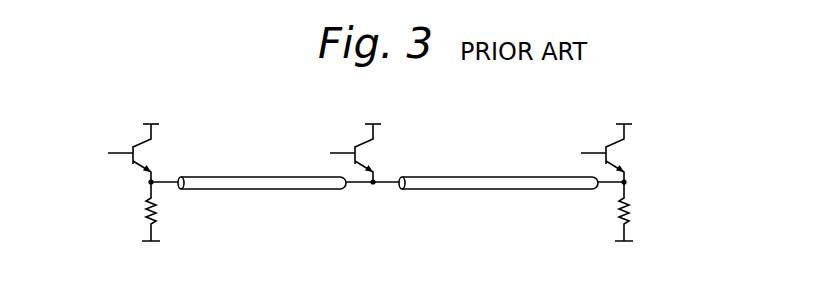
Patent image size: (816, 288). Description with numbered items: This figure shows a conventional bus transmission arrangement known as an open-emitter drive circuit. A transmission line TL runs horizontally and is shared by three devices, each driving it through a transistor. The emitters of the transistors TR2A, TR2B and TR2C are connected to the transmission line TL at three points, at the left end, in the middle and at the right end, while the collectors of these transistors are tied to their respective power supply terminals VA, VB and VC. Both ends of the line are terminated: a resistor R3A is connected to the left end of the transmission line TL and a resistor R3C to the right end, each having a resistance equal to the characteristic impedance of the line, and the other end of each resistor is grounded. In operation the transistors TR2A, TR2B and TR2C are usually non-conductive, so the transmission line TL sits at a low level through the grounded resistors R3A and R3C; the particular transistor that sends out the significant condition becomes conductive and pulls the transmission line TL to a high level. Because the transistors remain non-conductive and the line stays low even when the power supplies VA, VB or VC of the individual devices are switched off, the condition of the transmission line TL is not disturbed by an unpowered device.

The transistor TR2A is at (163, 154).
The transistor TR2B is at (386, 154).
The transistor TR2C is at (638, 154).
The resistor R3A is at (180, 211).
The resistor R3C is at (651, 211).
The transmission line TL is at (280, 177).
The supply voltage terminal + VA is at (147, 111).
The supply voltage terminal + VB is at (378, 111).
The supply voltage terminal + VC is at (622, 111).